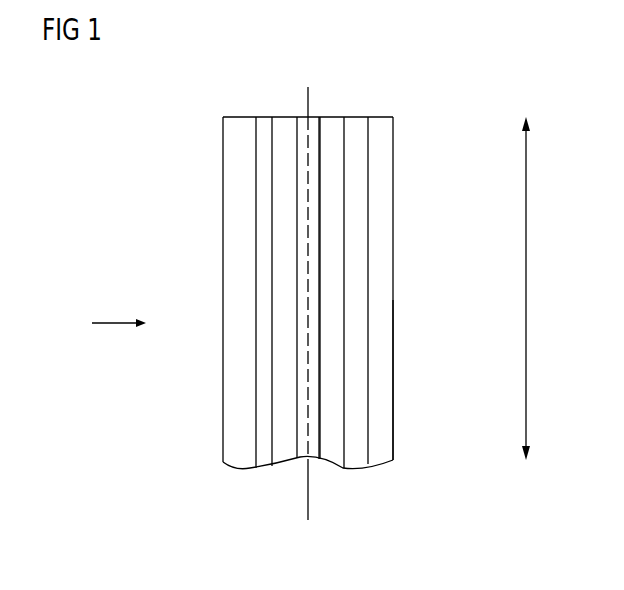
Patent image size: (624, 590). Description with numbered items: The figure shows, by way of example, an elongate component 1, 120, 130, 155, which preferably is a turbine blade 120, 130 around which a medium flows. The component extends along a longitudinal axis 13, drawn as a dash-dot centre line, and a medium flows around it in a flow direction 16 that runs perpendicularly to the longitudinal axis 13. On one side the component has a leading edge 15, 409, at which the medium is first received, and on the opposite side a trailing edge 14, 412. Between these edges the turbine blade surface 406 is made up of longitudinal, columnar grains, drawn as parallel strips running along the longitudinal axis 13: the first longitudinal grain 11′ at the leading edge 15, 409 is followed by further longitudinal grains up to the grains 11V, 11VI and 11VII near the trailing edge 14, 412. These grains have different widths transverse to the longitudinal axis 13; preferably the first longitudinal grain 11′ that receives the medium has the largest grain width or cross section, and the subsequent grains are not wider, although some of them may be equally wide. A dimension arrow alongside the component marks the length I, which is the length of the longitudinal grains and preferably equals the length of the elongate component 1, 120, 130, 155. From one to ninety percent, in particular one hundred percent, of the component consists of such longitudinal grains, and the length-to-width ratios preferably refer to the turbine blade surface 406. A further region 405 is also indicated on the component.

The elongate component 1 is at (233, 325).
The turbine blade 120 is at (233, 325).
The turbine blade 130 is at (233, 325).
The component 155 is at (233, 501).
The first longitudinal grain 11′ is at (233, 126).
The longitudinal grain 11V is at (330, 126).
The longitudinal grain 11VI is at (356, 126).
The longitudinal grain 11VII is at (381, 126).
The longitudinal axis 13 is at (308, 488).
The trailing edge 14 is at (439, 288).
The trailing edge 412 is at (393, 223).
The leading edge 15 is at (176, 289).
The leading edge 409 is at (223, 222).
The flow direction 16 is at (113, 322).
The region 405 is at (367, 505).
The turbine blade surface 406 is at (387, 388).
The length I is at (527, 290).